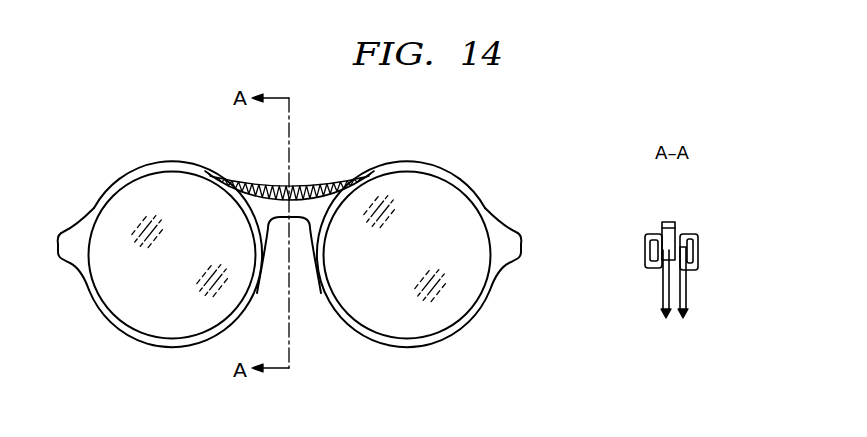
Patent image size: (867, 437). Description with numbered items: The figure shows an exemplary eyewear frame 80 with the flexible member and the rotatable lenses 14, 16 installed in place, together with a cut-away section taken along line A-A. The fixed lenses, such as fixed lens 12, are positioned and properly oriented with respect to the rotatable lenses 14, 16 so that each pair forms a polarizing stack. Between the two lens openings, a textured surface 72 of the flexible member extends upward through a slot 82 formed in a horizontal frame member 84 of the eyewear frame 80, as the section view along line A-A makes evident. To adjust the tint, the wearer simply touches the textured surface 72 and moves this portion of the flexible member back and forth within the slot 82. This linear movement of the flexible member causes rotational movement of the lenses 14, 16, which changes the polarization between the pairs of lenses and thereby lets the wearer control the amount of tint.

The fixed lens 12 is at (689, 294).
The rotatable lens 14 is at (128, 298).
The rotatable lens 16 is at (443, 303).
The textured surface 72 is at (318, 182).
The eyewear frame 80 is at (511, 234).
The slot 82 is at (210, 178).
The horizontal frame member 84 is at (182, 172).